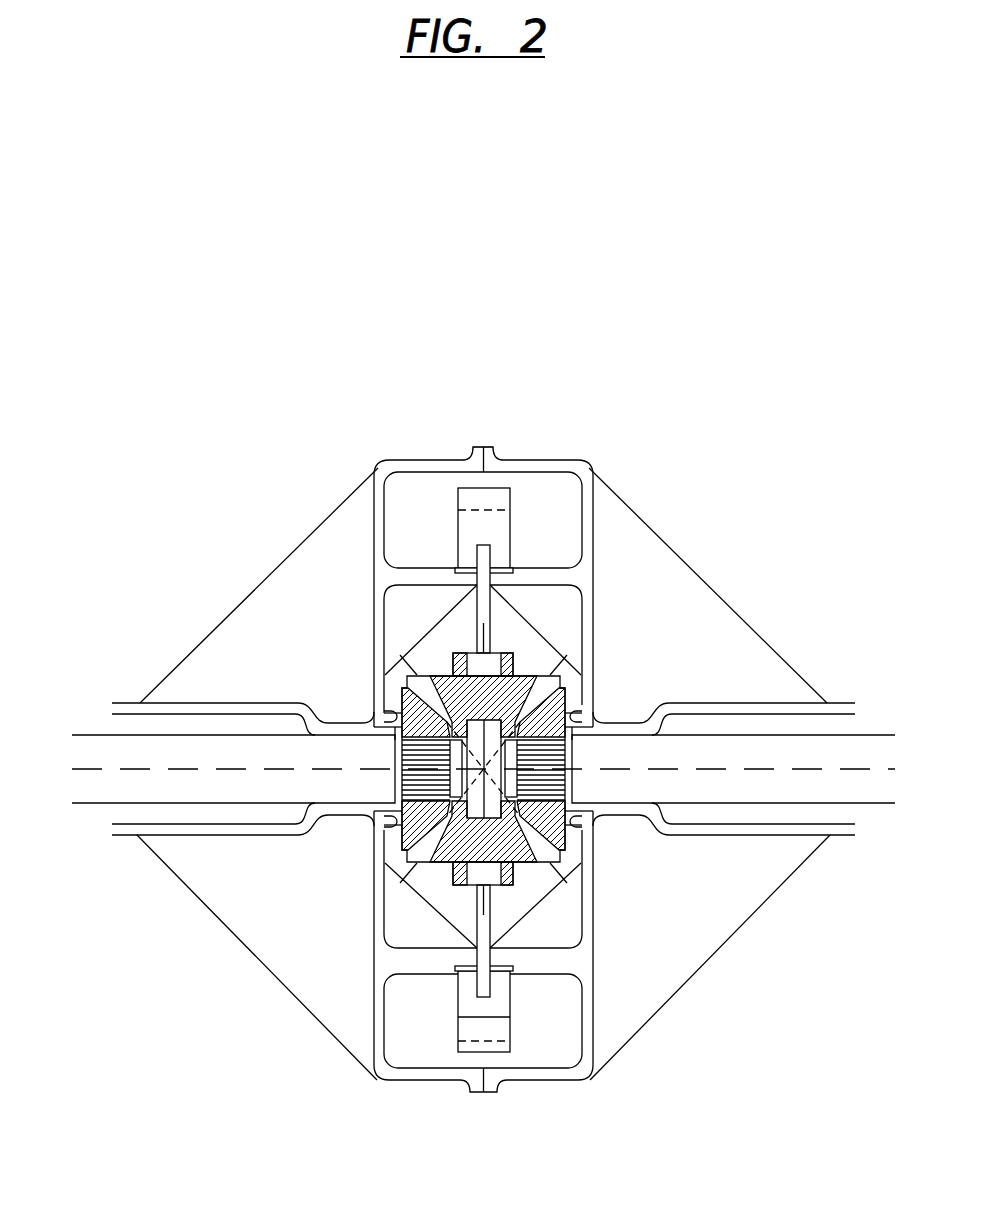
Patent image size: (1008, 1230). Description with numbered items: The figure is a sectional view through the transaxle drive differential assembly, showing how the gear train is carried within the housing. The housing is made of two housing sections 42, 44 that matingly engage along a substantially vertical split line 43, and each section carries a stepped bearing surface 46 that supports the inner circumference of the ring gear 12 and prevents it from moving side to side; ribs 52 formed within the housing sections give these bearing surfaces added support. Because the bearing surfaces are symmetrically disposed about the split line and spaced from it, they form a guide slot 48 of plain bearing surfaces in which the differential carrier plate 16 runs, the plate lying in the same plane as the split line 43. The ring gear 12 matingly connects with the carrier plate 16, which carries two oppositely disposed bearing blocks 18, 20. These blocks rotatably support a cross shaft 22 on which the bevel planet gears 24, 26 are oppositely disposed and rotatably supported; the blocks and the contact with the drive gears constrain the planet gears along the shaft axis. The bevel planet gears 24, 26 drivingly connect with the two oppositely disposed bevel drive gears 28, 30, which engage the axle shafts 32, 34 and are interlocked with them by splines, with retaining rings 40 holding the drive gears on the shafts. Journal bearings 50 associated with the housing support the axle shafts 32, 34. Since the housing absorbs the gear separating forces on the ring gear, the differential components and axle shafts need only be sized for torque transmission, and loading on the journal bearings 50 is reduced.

The ring gear 12 is at (493, 1005).
The differential carrier plate 16 is at (473, 958).
The bearing block 18 is at (512, 882).
The bearing block 20 is at (500, 652).
The cross shaft 22 is at (483, 942).
The bevel planet gear 24 is at (552, 686).
The bevel planet gear 26 is at (577, 846).
The bevel drive gear 28 is at (575, 707).
The bevel drive gear 30 is at (405, 700).
The axle shaft 32 is at (787, 787).
The axle shaft 34 is at (105, 750).
The retaining ring 40 is at (580, 717).
The housing section 42 is at (578, 468).
The split line 43 is at (513, 461).
The housing section 44 is at (440, 463).
The bearing surface 46 is at (465, 566).
The guide slot 48 is at (407, 568).
The journal bearing 50 is at (650, 730).
The rib 52 is at (407, 614).